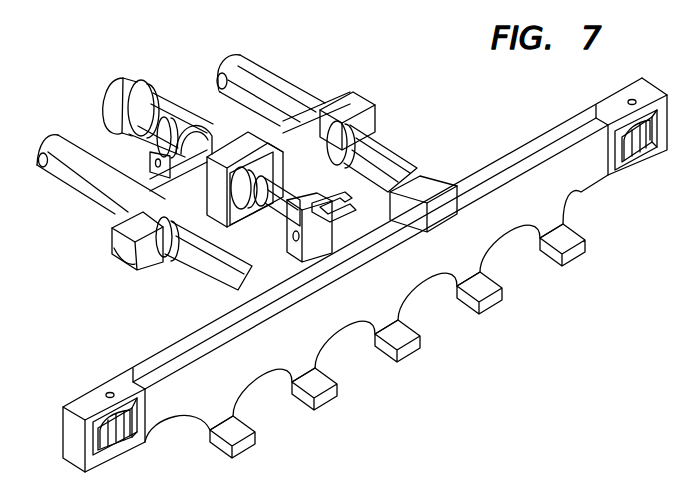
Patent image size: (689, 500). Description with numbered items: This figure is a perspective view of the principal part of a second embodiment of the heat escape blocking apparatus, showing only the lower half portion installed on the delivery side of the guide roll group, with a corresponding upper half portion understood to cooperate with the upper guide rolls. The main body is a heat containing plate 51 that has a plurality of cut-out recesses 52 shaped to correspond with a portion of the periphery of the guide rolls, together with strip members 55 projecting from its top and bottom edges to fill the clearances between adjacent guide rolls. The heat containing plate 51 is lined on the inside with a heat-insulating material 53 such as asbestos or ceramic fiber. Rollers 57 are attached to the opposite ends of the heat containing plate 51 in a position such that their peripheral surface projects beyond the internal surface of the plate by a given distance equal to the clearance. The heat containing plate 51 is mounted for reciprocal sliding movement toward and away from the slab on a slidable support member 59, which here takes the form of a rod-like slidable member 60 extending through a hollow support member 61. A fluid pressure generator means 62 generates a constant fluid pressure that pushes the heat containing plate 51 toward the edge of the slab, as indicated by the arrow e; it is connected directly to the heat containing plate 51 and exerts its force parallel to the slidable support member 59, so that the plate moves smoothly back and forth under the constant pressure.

The heat containing plate 51 is at (424, 298).
The cut-out recesses 52 is at (357, 333).
The heat-insulating material 53 is at (580, 195).
The strip members 55 is at (250, 426).
The rollers 57 is at (127, 436).
The slidable support member 59 is at (95, 214).
The rod-like slidable member 60 is at (395, 165).
The hollow support member 61 is at (293, 88).
The fluid pressure generator means 62 is at (158, 107).
The arrow e is at (381, 61).